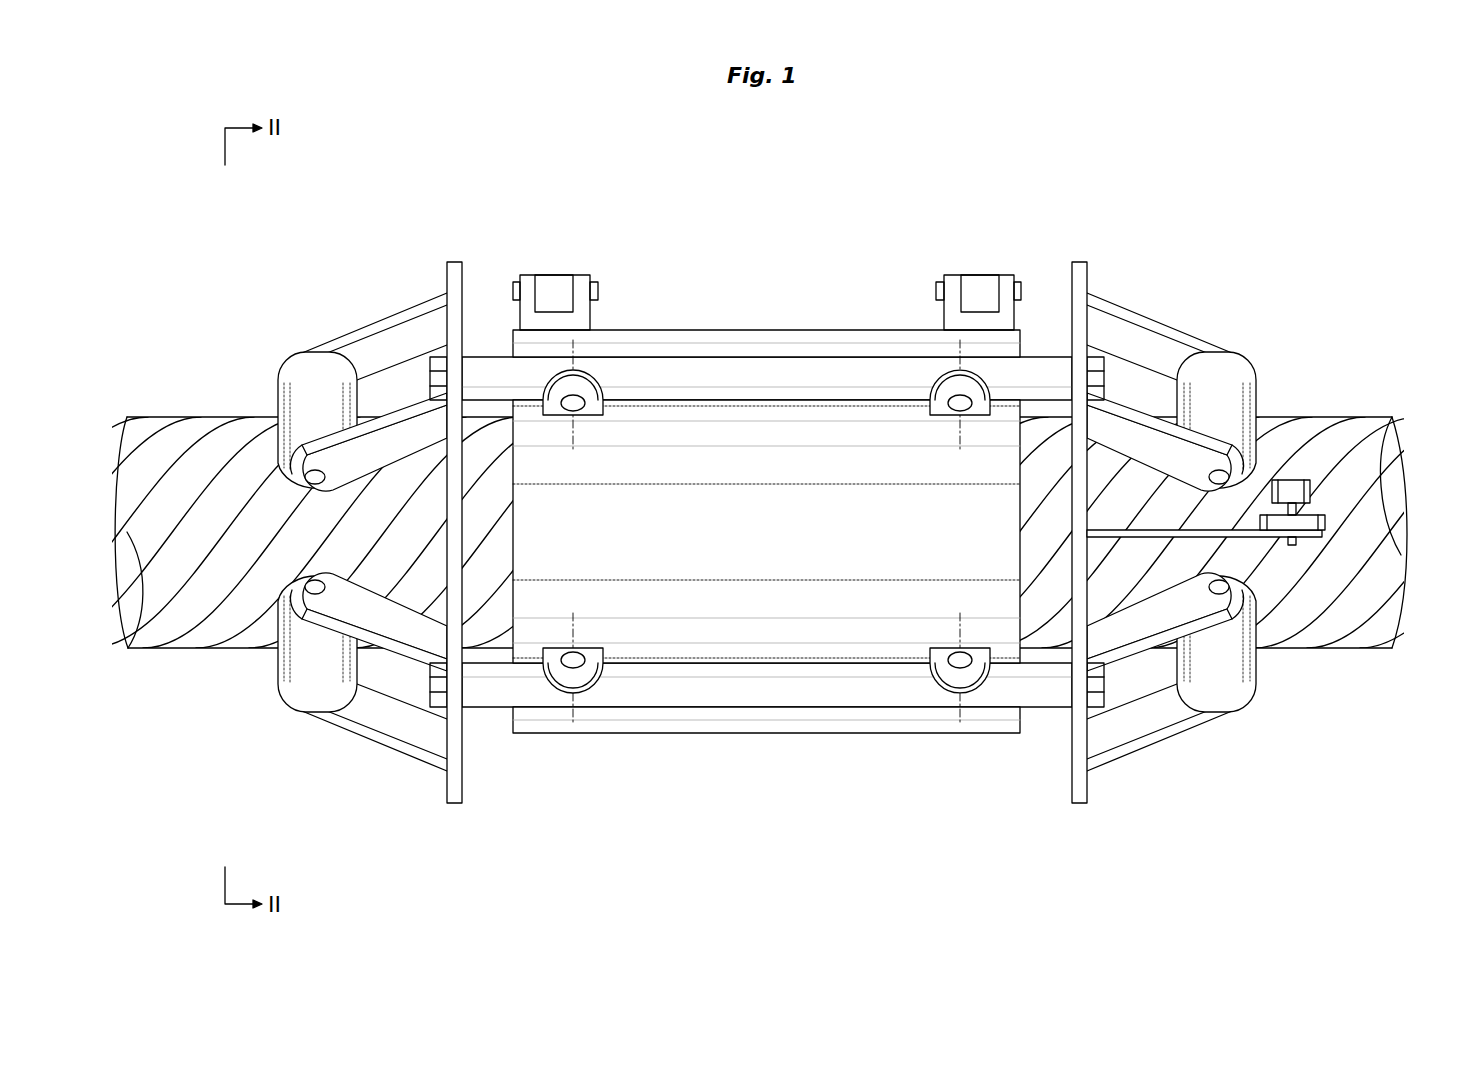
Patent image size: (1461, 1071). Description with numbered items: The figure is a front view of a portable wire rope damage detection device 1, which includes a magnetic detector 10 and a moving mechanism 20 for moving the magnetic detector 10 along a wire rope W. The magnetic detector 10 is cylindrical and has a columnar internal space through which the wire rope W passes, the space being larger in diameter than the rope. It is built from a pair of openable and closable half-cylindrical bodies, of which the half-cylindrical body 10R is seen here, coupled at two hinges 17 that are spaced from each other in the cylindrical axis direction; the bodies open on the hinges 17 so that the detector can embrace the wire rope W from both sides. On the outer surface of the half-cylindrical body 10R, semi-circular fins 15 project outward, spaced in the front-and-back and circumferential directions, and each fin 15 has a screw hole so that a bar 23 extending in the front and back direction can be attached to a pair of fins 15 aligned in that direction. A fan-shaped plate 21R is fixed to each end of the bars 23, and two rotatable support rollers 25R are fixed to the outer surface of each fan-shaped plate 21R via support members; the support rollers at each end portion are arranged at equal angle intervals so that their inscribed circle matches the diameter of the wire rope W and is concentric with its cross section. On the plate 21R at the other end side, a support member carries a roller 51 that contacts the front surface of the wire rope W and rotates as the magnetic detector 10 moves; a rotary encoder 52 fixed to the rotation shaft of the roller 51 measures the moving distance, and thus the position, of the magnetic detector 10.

The portable wire rope damage detection device 1 is at (862, 460).
The magnetic detector 10 is at (767, 476).
The half-cylindrical body 10R is at (760, 337).
The semi-circular fin 15 is at (578, 382).
The hinge 17 is at (555, 275).
The moving mechanism 20 is at (862, 491).
The fan-shaped plate 21R is at (454, 268).
The bar 23 is at (703, 372).
The support roller 25R is at (293, 377).
The roller 51 is at (1320, 522).
The rotary encoder 52 is at (1291, 483).
The wire rope W is at (1366, 612).